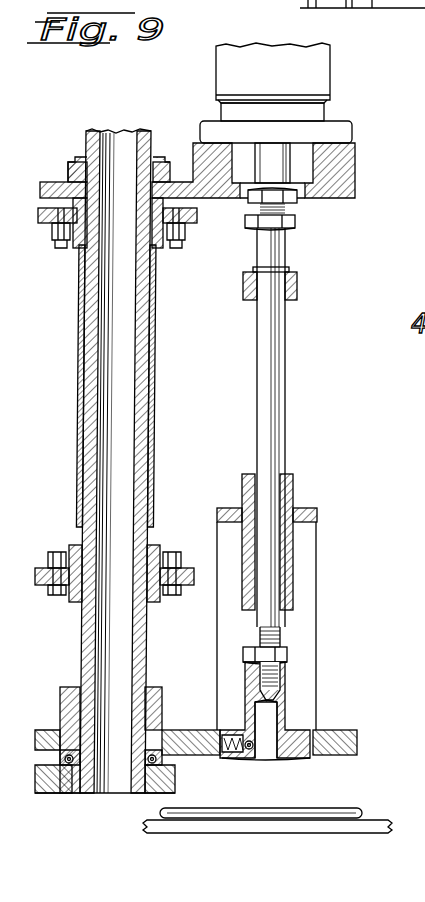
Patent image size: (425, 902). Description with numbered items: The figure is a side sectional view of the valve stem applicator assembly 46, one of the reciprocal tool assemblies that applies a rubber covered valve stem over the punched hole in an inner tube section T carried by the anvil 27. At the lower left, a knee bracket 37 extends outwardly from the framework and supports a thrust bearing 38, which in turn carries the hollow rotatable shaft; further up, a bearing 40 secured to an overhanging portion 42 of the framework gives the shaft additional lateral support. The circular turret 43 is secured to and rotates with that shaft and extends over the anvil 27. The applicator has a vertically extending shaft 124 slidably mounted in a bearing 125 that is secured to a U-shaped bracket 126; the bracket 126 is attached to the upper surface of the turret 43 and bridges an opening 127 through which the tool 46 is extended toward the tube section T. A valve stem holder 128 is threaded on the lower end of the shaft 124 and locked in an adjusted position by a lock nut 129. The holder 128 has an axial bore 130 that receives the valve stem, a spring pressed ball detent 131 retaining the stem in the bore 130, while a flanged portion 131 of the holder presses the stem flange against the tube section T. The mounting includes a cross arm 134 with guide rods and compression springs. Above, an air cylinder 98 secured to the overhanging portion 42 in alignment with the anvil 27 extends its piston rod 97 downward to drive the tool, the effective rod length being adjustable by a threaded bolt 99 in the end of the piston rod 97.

The air cylinder 98 is at (316, 68).
The piston rod 97 is at (282, 165).
The threaded bolt 99 is at (292, 224).
The overhanging portion 42 is at (177, 183).
The bearing 40 is at (82, 183).
The cross arm 134 is at (298, 295).
The shaft 124 is at (272, 357).
The valve stem applicator assembly 46 is at (304, 427).
The bearing 125 is at (292, 488).
The U-shaped bracket 126 is at (317, 518).
The lock nut 129 is at (287, 655).
The valve stem holder 128 is at (287, 690).
The axial bore 130 is at (268, 717).
The opening 127 is at (355, 734).
The turret 43 is at (353, 755).
The spring pressed ball detent 131 is at (246, 758).
The inner tube section T is at (363, 812).
The anvil 27 is at (176, 824).
The knee bracket 37 is at (60, 795).
The thrust bearing 38 is at (72, 795).